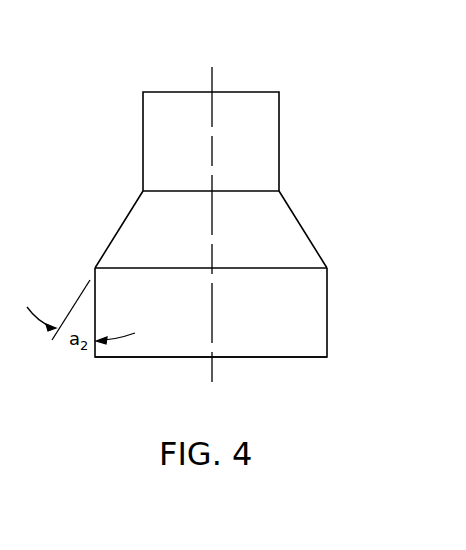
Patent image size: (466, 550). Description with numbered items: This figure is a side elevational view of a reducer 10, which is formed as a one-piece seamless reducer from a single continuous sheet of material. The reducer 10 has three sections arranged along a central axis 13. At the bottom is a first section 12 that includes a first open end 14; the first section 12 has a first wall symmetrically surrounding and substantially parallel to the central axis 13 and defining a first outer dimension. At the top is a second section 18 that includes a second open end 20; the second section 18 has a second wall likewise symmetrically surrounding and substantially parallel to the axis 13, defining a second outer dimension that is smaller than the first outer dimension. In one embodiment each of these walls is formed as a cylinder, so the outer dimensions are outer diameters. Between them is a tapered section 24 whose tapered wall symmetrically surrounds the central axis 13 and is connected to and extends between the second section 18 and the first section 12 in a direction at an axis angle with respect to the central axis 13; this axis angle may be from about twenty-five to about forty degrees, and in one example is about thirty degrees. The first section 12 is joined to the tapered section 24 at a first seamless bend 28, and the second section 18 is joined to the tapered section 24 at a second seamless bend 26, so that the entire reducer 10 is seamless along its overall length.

The reducer 10 is at (268, 223).
The first section 12 is at (338, 312).
The central axis 13 is at (211, 336).
The first open end 14 is at (294, 365).
The second section 18 is at (292, 140).
The second open end 20 is at (237, 90).
The tapered section 24 is at (314, 220).
The second seamless bend 26 is at (160, 190).
The first seamless bend 28 is at (157, 267).